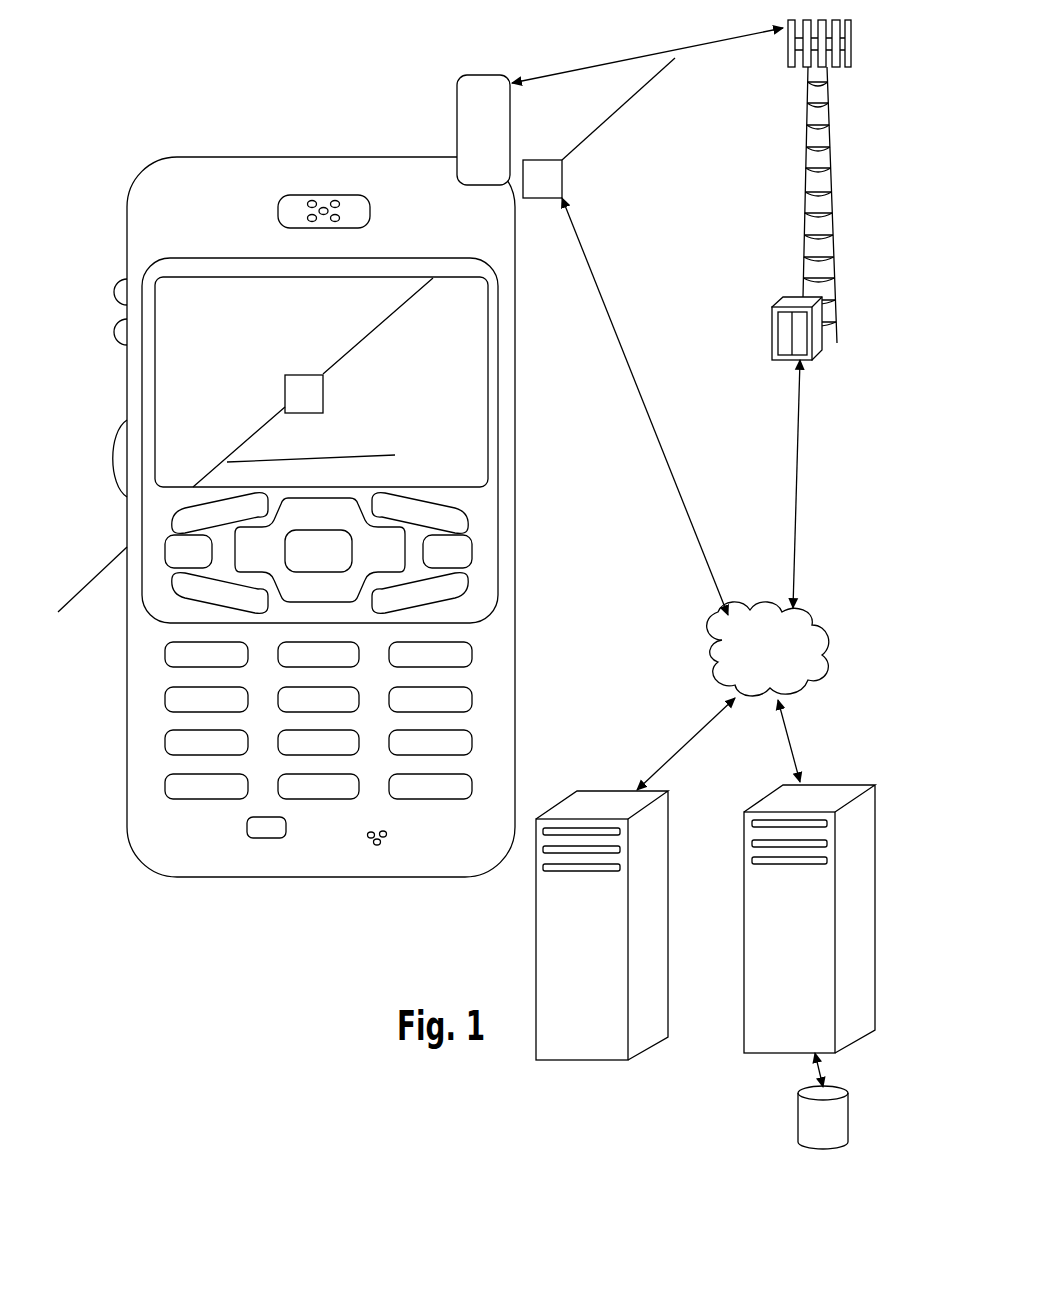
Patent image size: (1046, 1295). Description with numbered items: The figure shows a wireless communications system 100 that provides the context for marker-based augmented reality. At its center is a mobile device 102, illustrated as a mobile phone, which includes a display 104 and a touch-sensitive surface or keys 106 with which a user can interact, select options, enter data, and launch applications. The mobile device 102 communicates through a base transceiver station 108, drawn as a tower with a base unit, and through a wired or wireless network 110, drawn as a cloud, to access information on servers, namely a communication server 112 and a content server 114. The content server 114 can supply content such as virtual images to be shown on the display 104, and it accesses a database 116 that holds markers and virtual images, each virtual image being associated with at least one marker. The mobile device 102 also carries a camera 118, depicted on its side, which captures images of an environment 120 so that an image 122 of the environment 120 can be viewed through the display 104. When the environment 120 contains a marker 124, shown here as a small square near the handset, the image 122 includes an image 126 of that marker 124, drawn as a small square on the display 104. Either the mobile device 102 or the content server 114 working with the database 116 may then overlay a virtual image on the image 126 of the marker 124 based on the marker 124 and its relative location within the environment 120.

The wireless communications system 100 is at (615, 102).
The mobile device 102 is at (183, 880).
The display 104 is at (488, 340).
The keys 106 is at (523, 488).
The base transceiver station 108 is at (822, 350).
The network 110 is at (723, 685).
The communication server 112 is at (536, 895).
The content server 114 is at (753, 873).
The database 116 is at (800, 1108).
The camera 118 is at (110, 447).
The environment 120 is at (642, 90).
The image of the environment 122 is at (395, 455).
The marker 124 is at (562, 182).
The image of the marker 126 is at (323, 405).